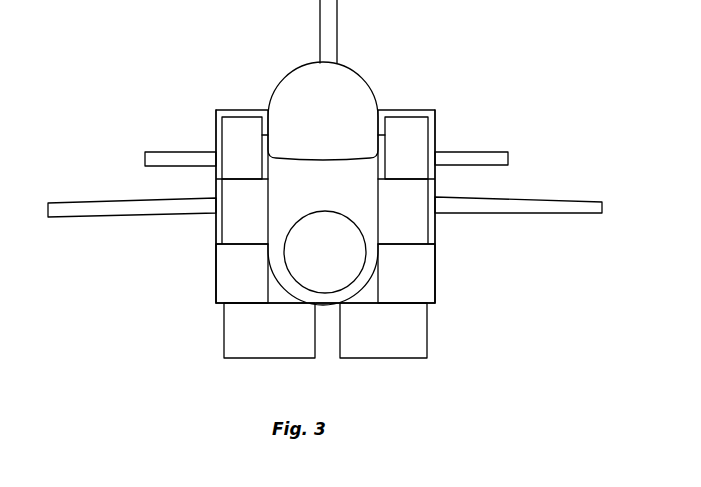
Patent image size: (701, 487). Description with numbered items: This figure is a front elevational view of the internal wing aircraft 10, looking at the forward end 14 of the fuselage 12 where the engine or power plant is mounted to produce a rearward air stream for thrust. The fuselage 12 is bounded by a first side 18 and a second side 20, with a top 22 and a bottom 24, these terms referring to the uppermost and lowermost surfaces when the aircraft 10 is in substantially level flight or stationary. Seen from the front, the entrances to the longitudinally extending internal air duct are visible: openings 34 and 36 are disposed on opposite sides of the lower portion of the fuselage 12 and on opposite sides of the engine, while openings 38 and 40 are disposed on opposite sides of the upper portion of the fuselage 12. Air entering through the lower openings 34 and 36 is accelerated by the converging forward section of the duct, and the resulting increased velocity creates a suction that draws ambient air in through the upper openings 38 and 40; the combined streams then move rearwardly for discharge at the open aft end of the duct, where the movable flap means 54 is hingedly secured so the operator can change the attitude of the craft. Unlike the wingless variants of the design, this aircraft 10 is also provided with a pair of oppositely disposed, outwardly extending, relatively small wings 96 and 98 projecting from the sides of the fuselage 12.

The internal wing aircraft 10 is at (436, 70).
The fuselage 12 is at (360, 94).
The forward end 14 is at (326, 211).
The first side 18 is at (437, 136).
The second side 20 is at (216, 133).
The top 22 is at (329, 63).
The bottom 24 is at (365, 305).
The opening 34 is at (428, 275).
The opening 36 is at (228, 271).
The opening 38 is at (437, 110).
The opening 40 is at (237, 125).
The movable flap means 54 is at (228, 341).
The wing 96 is at (565, 198).
The wing 98 is at (80, 203).